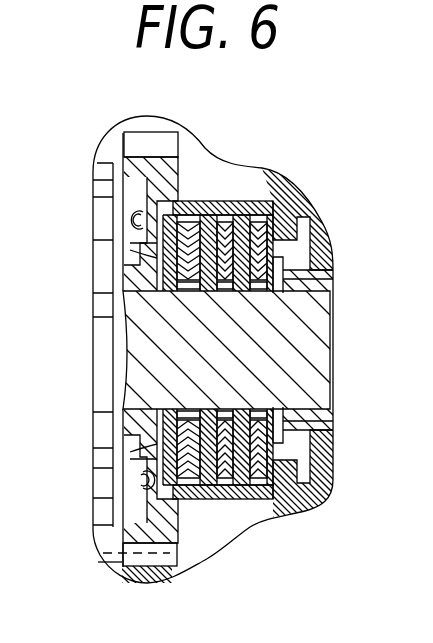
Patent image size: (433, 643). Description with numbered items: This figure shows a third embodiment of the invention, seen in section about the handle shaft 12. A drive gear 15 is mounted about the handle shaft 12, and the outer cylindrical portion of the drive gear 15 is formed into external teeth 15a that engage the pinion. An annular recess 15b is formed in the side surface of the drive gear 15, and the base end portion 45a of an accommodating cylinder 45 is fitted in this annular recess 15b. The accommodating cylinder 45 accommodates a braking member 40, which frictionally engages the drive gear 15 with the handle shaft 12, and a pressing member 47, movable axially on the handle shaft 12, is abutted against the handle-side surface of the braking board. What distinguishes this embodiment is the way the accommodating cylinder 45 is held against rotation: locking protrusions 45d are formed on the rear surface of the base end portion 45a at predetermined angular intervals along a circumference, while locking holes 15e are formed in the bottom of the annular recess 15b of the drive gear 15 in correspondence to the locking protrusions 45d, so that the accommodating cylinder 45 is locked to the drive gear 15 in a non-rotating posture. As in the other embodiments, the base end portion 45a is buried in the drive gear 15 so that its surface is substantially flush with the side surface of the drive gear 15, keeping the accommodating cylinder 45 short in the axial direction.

The handle shaft 12 is at (323, 337).
The drive gear 15 is at (180, 160).
The external teeth 15a is at (124, 145).
The annular recess 15b is at (130, 497).
The locking holes 15e is at (130, 250).
The braking member 40 is at (279, 226).
The accommodating cylinder 45 is at (250, 207).
The base end portion 45a is at (126, 255).
The locking protrusions 45d is at (135, 216).
The pressing member 47 is at (306, 281).